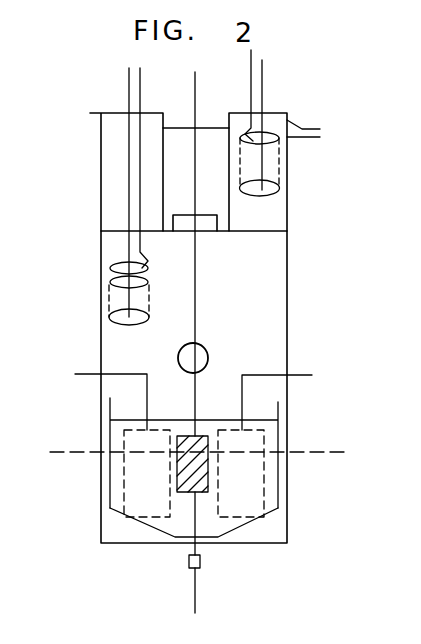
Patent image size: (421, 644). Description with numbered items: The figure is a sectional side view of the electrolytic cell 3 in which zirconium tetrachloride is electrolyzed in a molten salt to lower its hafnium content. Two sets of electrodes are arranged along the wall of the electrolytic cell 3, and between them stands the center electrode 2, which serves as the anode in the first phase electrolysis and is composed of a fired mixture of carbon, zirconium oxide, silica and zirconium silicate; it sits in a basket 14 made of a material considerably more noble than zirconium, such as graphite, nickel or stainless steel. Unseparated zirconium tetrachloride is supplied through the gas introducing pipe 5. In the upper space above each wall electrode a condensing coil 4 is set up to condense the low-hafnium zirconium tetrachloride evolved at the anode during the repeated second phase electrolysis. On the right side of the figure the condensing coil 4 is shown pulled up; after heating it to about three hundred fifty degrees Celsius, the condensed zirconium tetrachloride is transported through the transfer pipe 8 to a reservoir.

The center electrode 2 is at (195, 273).
The condensing coil 4 is at (110, 285).
The transfer pipe 8 is at (301, 128).
The gas introducing pipe 5 is at (208, 357).
The basket 14 is at (185, 493).
The electrolytic cell 3 is at (238, 530).